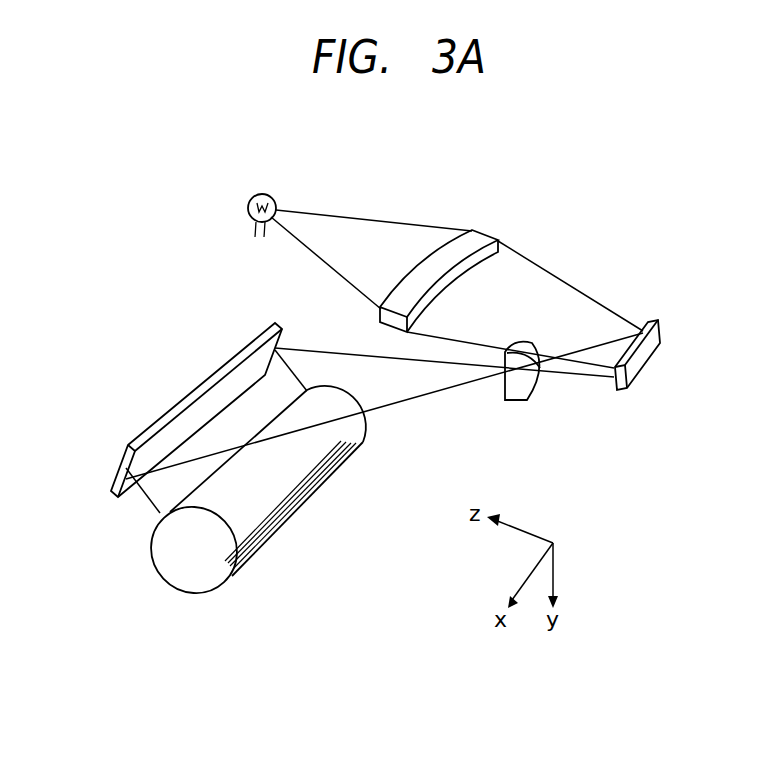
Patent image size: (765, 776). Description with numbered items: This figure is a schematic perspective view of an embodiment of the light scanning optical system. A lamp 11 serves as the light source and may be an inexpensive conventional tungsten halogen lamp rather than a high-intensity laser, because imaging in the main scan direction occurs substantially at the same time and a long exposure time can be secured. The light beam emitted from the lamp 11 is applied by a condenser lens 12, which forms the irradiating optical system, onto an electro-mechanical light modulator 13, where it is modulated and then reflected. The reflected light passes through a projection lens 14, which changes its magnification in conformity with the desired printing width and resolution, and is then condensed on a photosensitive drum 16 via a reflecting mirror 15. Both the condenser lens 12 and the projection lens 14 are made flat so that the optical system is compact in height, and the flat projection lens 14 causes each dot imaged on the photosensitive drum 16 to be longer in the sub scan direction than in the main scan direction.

The lamp 11 is at (252, 194).
The condenser lens 12 is at (480, 236).
The electro-mechanical light modulator 13 is at (640, 365).
The projection lens 14 is at (525, 393).
The reflecting mirror 15 is at (120, 458).
The photosensitive drum 16 is at (290, 513).